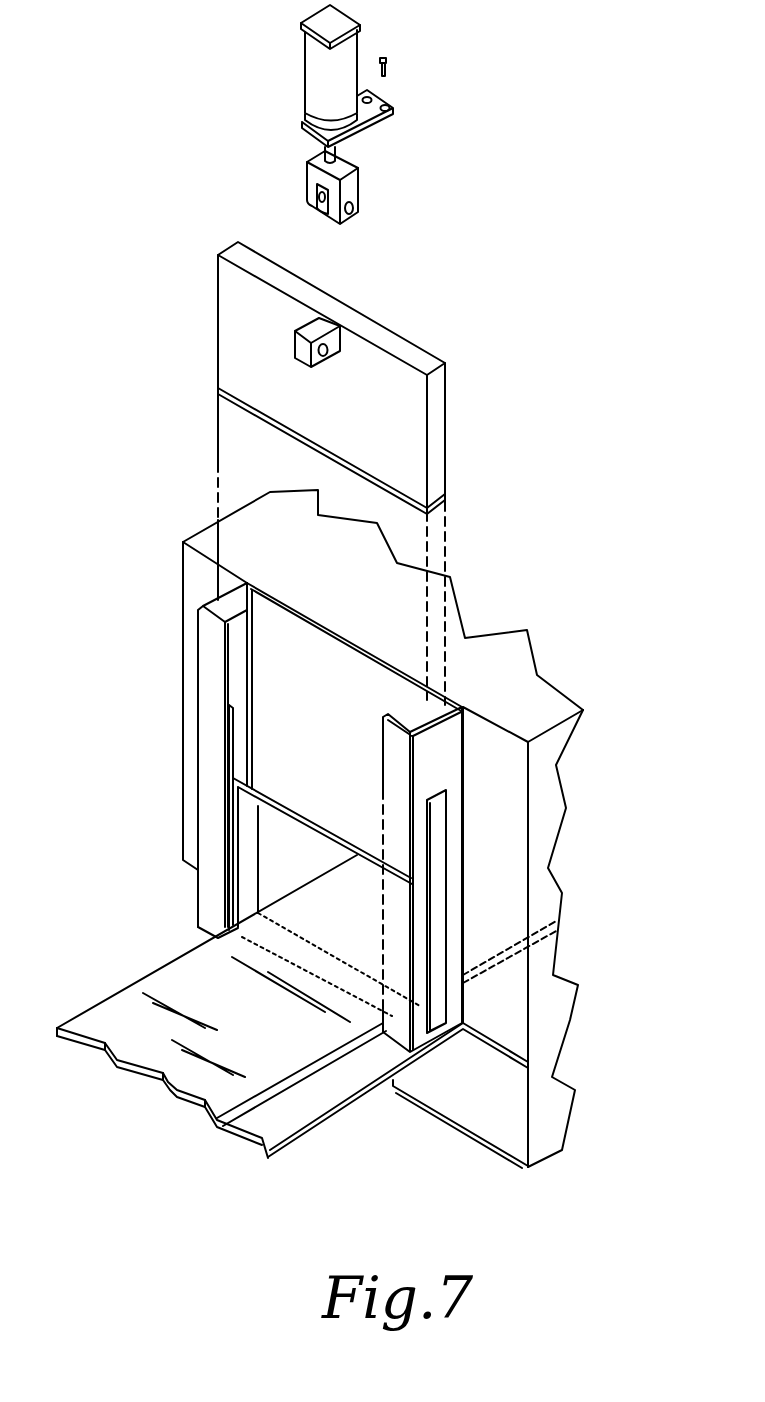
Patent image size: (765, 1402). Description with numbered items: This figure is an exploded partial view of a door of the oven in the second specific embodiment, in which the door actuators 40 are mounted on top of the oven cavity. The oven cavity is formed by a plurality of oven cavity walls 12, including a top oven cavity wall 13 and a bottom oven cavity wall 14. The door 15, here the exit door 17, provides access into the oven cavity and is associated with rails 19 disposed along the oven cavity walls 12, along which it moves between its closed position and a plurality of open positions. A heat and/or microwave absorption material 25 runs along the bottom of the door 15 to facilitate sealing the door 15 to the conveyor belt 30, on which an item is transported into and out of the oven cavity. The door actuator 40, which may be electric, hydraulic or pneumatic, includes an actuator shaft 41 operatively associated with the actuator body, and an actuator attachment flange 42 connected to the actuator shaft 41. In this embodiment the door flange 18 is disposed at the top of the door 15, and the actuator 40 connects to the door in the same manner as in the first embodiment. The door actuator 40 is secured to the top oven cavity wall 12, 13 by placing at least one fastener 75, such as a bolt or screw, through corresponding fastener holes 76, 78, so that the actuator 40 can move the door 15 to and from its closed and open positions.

The oven cavity wall 12 is at (302, 507).
The top oven cavity wall 13 is at (205, 545).
The bottom oven cavity wall 14 is at (553, 802).
The door 15 is at (432, 371).
The exit door 17 is at (252, 820).
The door flange 18 is at (320, 327).
The rail 19 is at (210, 641).
The heat and/or microwave absorption material 25 is at (218, 391).
The conveyor belt 30 is at (110, 1010).
The door actuator 40 is at (298, 71).
The actuator shaft 41 is at (338, 157).
The actuator attachment flange 42 is at (310, 174).
The fastener 75 is at (386, 58).
The fastener hole 76 is at (386, 112).
The fastener hole 78 is at (365, 640).